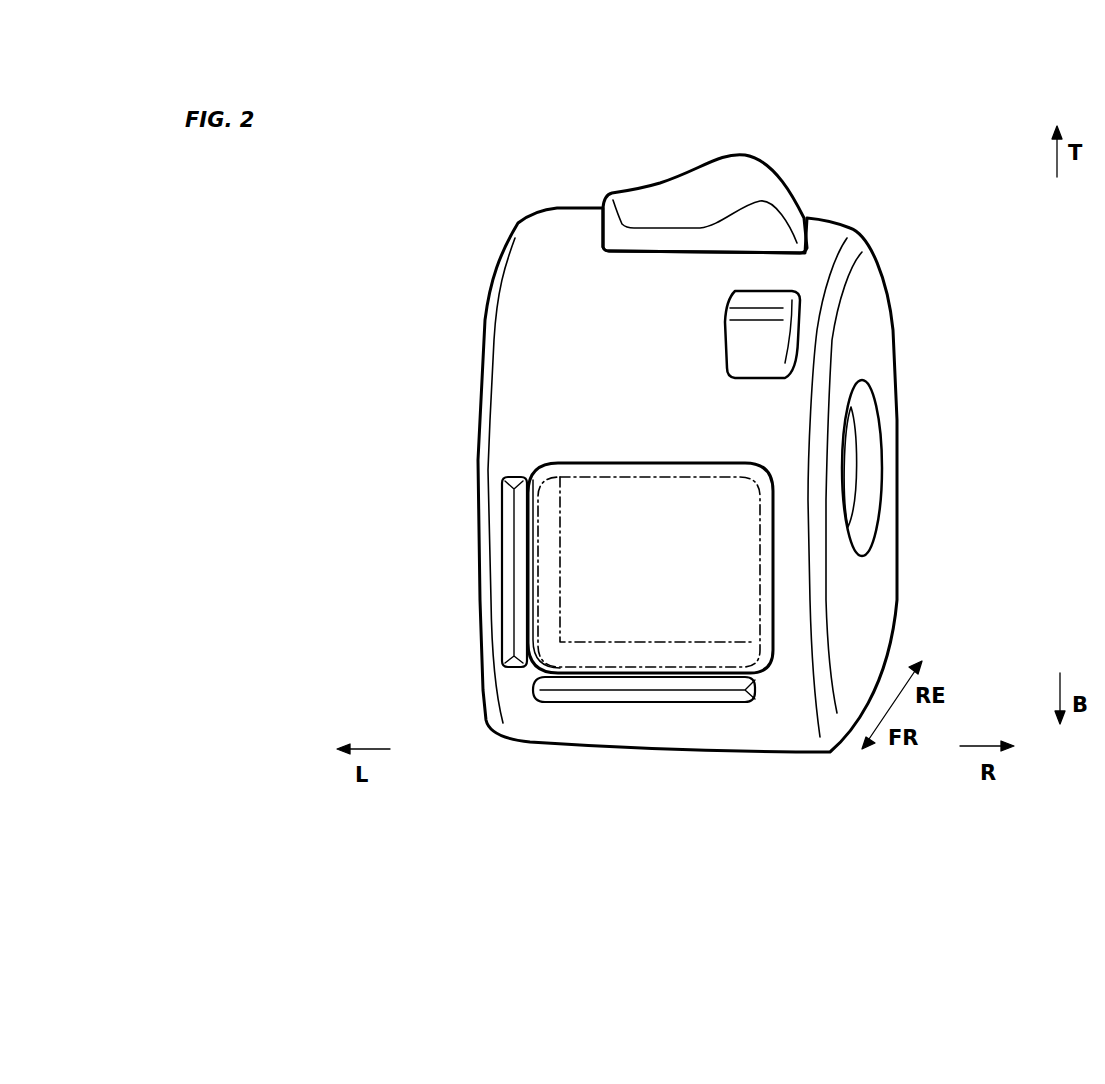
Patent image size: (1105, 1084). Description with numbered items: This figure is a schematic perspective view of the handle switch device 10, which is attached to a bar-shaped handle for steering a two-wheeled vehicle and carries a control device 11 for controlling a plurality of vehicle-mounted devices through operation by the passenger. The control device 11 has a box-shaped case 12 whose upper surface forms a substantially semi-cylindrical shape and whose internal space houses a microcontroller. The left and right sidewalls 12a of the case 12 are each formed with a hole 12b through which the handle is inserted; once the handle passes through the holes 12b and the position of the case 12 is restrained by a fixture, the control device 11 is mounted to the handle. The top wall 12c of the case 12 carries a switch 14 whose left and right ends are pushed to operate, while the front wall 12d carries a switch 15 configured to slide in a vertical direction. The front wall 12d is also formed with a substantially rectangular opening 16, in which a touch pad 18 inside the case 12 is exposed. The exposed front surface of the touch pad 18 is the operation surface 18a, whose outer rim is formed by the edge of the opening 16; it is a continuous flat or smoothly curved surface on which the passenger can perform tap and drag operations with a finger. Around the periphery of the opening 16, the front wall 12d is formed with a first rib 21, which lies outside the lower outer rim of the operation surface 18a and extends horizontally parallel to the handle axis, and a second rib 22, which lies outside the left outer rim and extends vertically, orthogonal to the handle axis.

The handle switch device 10 is at (955, 224).
The control device 11 is at (471, 215).
The case 12 is at (560, 202).
The sidewall 12a is at (480, 368).
The hole 12b is at (878, 455).
The top wall 12c is at (827, 218).
The front wall 12d is at (507, 415).
The switch 14 is at (763, 172).
The switch 15 is at (740, 347).
The opening 16 is at (700, 463).
The touch pad 18 is at (580, 482).
The operation surface 18a is at (693, 537).
The first rib 21 is at (533, 688).
The second rib 22 is at (507, 587).